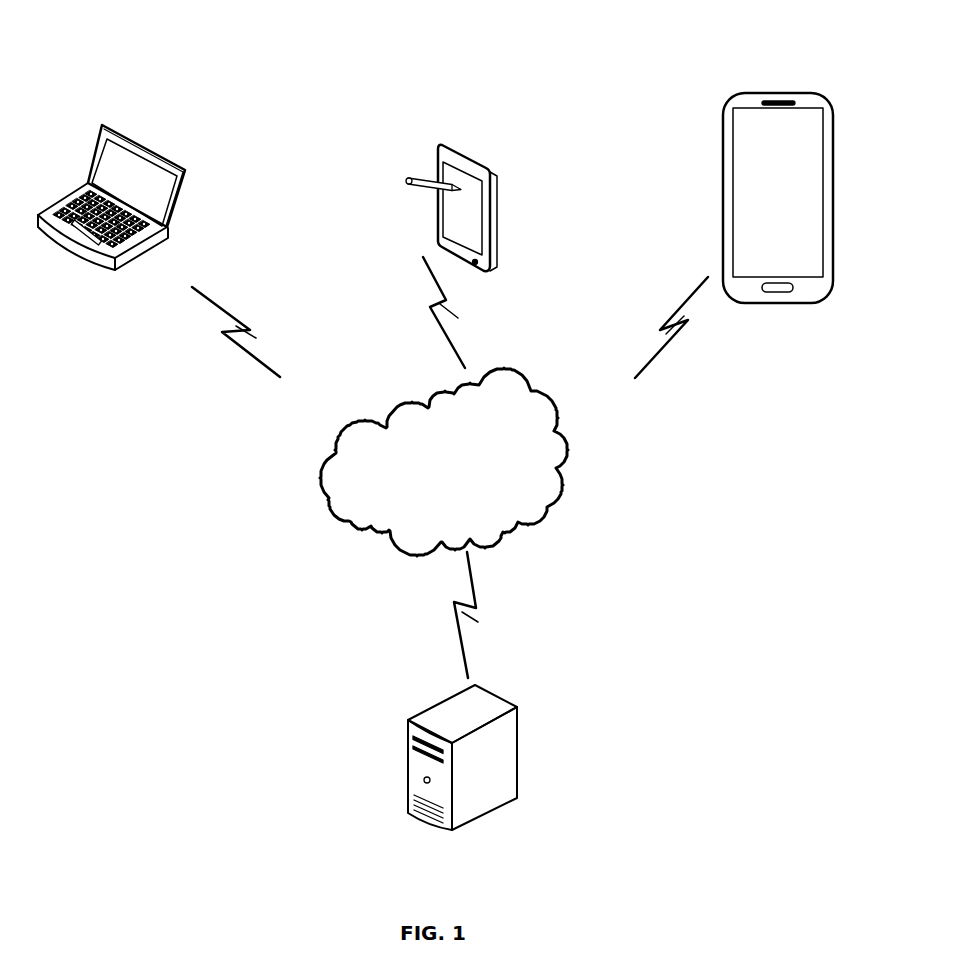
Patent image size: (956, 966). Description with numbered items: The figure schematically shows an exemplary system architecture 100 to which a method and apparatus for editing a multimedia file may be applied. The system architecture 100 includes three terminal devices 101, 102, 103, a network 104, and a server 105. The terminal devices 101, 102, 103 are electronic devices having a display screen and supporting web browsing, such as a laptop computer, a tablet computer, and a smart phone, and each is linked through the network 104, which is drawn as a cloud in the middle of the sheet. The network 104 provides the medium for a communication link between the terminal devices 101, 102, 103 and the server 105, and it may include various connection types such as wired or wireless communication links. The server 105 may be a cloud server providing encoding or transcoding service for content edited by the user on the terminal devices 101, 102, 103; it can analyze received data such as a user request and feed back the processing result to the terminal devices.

The system architecture 100 is at (152, 60).
The terminal device 101 is at (159, 237).
The terminal device 102 is at (451, 237).
The terminal device 103 is at (734, 220).
The network 104 is at (444, 462).
The server 105 is at (462, 691).